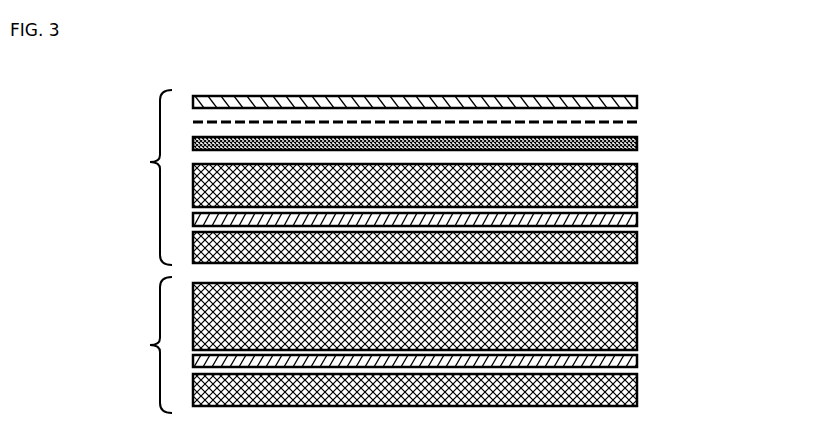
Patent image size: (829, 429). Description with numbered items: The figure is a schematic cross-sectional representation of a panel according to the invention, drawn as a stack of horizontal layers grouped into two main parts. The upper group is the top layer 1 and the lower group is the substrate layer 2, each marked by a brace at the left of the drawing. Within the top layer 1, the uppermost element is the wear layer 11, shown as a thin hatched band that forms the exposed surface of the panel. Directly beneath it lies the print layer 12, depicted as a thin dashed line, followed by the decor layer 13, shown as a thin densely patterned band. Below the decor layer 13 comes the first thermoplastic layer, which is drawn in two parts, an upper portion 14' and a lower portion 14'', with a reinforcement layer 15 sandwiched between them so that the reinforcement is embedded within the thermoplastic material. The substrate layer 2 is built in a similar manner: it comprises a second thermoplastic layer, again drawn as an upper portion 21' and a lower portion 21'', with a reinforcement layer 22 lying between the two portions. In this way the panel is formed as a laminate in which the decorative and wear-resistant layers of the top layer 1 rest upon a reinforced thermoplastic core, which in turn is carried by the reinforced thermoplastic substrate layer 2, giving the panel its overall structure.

The top layer 1 is at (152, 162).
The substrate layer 2 is at (152, 345).
The wear layer 11 is at (637, 102).
The print layer 12 is at (637, 122).
The decor layer 13 is at (637, 144).
The first thermoplastic layer 14' is at (463, 183).
The reinforcement layer 15 is at (637, 220).
The first thermoplastic layer 14'' is at (466, 242).
The second thermoplastic layer 21' is at (463, 316).
The reinforcement layer 22 is at (637, 361).
The second thermoplastic layer 21'' is at (466, 393).